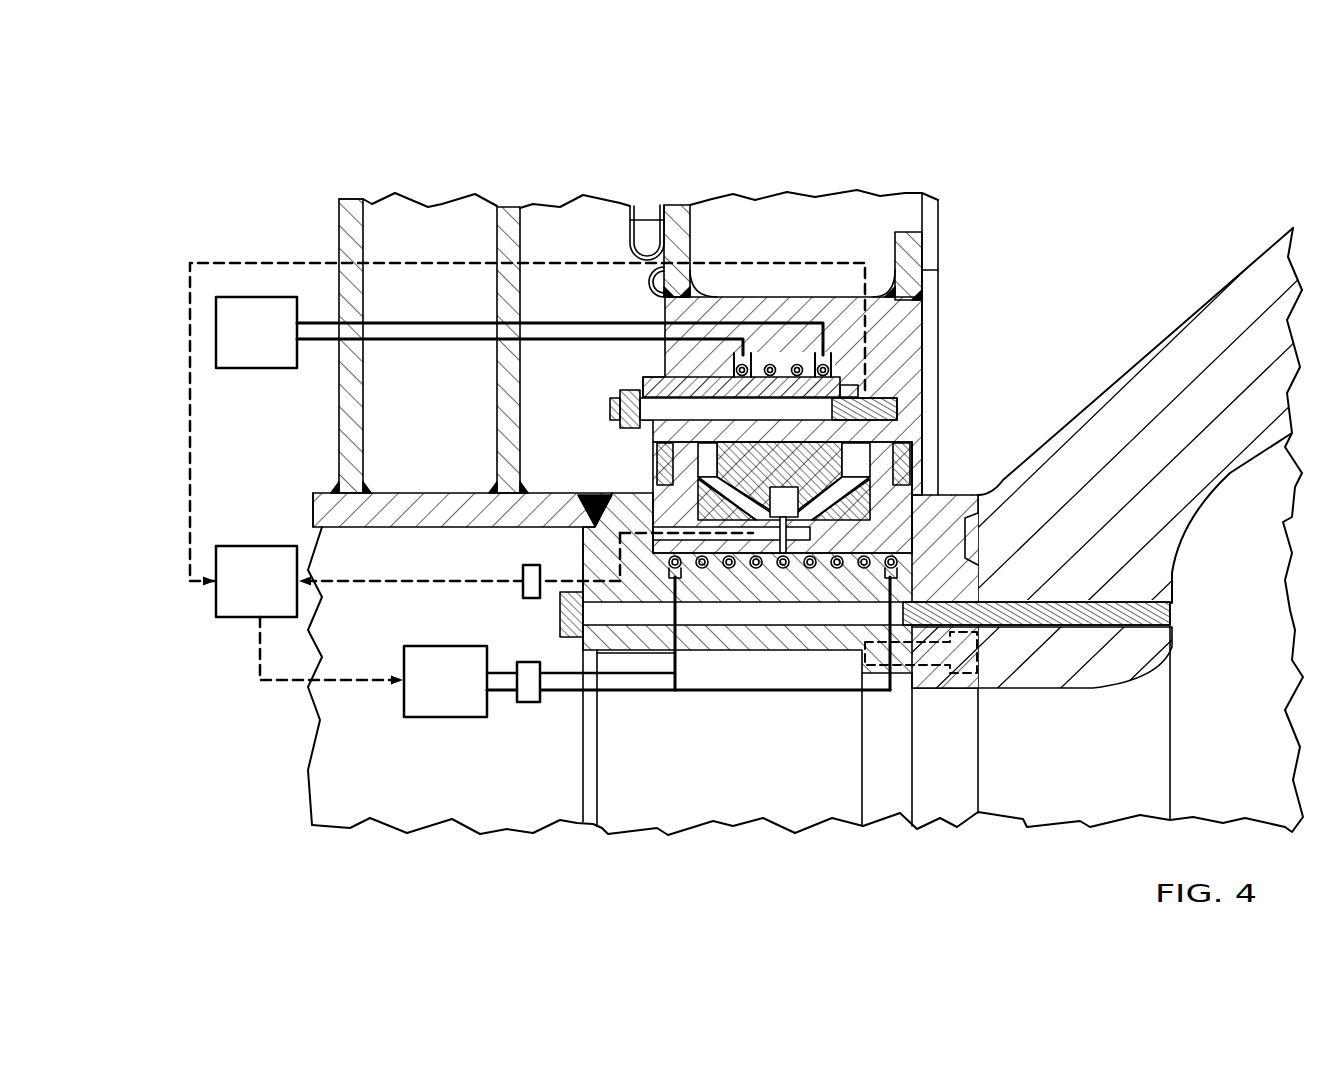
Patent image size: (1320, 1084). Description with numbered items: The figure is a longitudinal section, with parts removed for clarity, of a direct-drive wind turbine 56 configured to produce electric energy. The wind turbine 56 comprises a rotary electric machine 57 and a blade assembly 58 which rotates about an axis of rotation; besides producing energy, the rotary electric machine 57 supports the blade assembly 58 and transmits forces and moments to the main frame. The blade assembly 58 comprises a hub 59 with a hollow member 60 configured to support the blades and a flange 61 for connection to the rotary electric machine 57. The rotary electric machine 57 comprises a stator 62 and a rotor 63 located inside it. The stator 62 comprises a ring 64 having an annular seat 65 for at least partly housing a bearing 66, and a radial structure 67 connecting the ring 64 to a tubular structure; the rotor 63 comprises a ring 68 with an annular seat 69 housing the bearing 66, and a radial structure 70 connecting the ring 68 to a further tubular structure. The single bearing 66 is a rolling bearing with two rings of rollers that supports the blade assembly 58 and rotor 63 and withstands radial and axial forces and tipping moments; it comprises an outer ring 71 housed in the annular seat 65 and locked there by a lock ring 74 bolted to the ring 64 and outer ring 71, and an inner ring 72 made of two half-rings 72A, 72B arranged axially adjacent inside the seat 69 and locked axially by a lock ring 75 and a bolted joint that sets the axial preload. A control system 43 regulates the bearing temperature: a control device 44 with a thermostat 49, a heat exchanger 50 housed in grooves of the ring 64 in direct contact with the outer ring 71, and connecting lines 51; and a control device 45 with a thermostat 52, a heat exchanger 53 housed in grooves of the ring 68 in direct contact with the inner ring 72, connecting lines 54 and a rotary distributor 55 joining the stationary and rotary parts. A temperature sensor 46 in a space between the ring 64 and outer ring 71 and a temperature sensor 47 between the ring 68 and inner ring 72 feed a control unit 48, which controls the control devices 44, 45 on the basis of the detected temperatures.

The control system 43 is at (176, 622).
The control device 44 is at (320, 310).
The control device 45 is at (504, 719).
The temperature sensor 46 is at (845, 383).
The temperature sensor 47 is at (765, 530).
The control unit 48 is at (240, 600).
The thermostat 49 is at (274, 362).
The heat exchanger 50 is at (770, 352).
The connecting lines 51 is at (450, 340).
The thermostat 52 is at (440, 700).
The heat exchanger 53 is at (730, 570).
The connecting lines 54 is at (605, 676).
The rotary distributor 55 is at (527, 692).
The wind turbine 56 is at (340, 172).
The rotary electric machine 57 is at (950, 190).
The blade assembly 58 is at (1243, 217).
The hub 59 is at (1173, 303).
The hollow member 60 is at (1218, 428).
The flange 61 is at (1075, 565).
The stator 62 is at (960, 242).
The rotor 63 is at (322, 228).
The ring 64 is at (790, 305).
The annular seat 65 is at (782, 412).
The bearing 66 is at (795, 570).
The radial structure 67 is at (680, 222).
The ring 68 is at (697, 642).
The annular seat 69 is at (918, 500).
The radial structure 70 is at (328, 447).
The outer ring 71 is at (760, 445).
The inner ring 72 is at (770, 567).
The half-ring 72A is at (670, 512).
The half-ring 72B is at (940, 610).
The lock ring 74 is at (680, 430).
The lock ring 75 is at (955, 640).